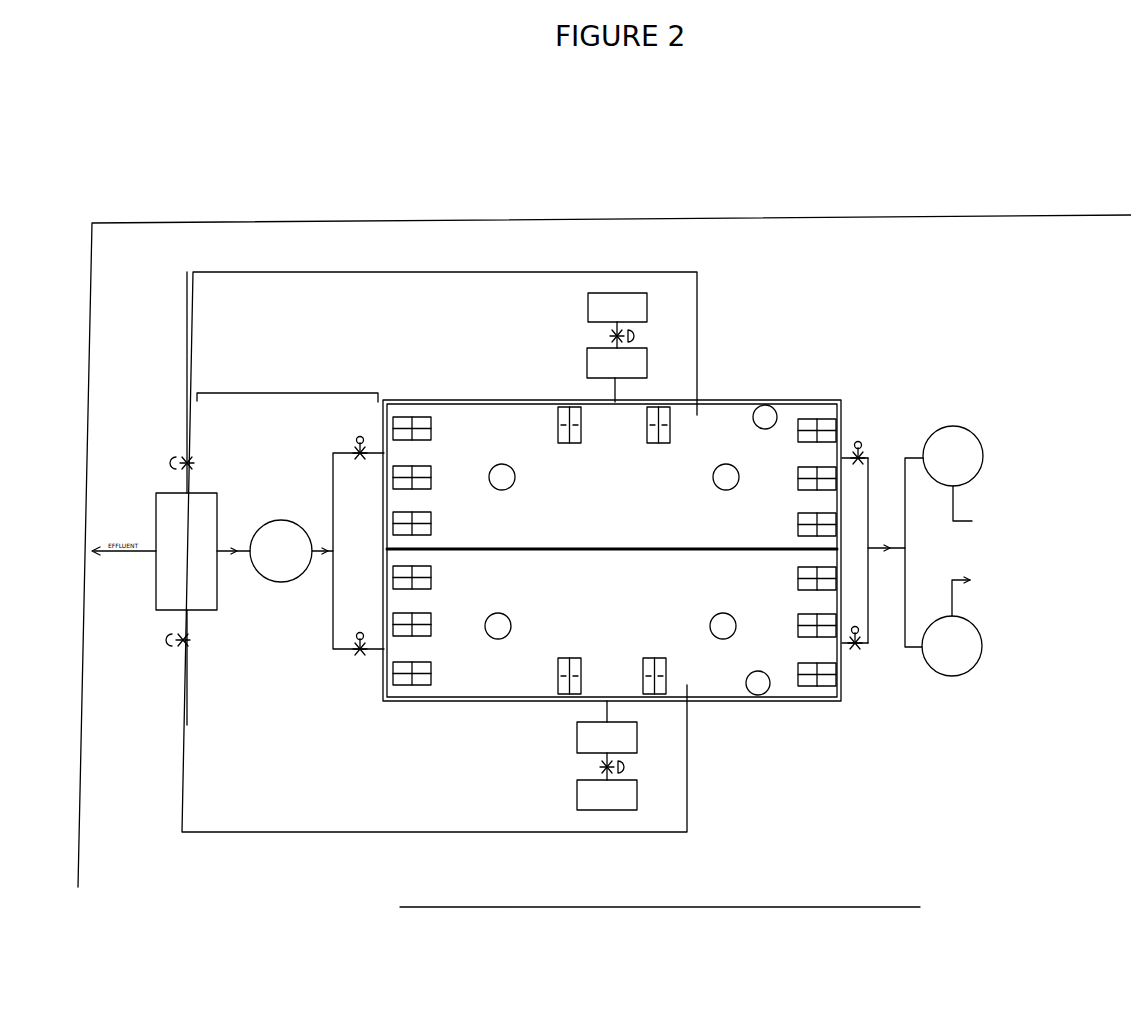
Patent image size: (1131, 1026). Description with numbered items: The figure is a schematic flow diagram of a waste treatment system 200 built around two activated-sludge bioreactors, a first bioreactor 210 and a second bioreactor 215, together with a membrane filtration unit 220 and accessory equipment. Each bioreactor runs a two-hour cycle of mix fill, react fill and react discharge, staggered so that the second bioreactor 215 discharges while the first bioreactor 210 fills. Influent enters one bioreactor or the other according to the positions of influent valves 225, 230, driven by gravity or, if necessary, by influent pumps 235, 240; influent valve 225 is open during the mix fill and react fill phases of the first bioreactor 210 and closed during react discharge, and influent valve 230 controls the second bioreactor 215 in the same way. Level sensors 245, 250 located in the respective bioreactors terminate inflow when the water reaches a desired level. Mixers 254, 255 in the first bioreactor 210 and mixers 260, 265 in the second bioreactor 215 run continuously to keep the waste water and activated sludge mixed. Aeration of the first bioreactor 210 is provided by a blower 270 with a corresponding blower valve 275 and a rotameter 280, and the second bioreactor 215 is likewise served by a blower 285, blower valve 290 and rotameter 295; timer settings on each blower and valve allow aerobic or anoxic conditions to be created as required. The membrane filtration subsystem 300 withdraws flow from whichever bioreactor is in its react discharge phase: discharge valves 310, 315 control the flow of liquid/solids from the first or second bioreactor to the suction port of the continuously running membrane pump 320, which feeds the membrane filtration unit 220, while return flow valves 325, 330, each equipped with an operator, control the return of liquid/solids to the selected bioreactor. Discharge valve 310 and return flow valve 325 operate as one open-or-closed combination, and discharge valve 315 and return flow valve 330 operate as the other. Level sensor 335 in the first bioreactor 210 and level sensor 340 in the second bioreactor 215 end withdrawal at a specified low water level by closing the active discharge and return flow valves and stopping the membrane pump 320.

The waste treatment system 200 is at (192, 232).
The first bioreactor 210 is at (479, 398).
The second bioreactor 215 is at (452, 706).
The membrane filtration unit 220 is at (212, 611).
The influent valve 225 is at (860, 431).
The influent valve 230 is at (857, 674).
The influent pump 235 is at (950, 425).
The influent pump 240 is at (943, 681).
The level sensor 245 is at (765, 400).
The level sensor 250 is at (757, 697).
The mixer 254 is at (503, 467).
The mixer 255 is at (712, 467).
The mixer 260 is at (491, 613).
The mixer 265 is at (713, 613).
The blower 270 is at (619, 290).
The blower valve 275 is at (660, 333).
The rotameter 280 is at (641, 367).
The blower 285 is at (575, 801).
The blower valve 290 is at (650, 769).
The rotameter 295 is at (572, 741).
The membrane filtration subsystem 300 is at (303, 392).
The discharge valve 310 is at (348, 440).
The discharge valve 315 is at (343, 660).
The membrane pump 320 is at (277, 521).
The return flow valve 325 is at (172, 456).
The return flow valve 330 is at (165, 655).
The level sensor 335 is at (772, 410).
The level sensor 340 is at (767, 689).